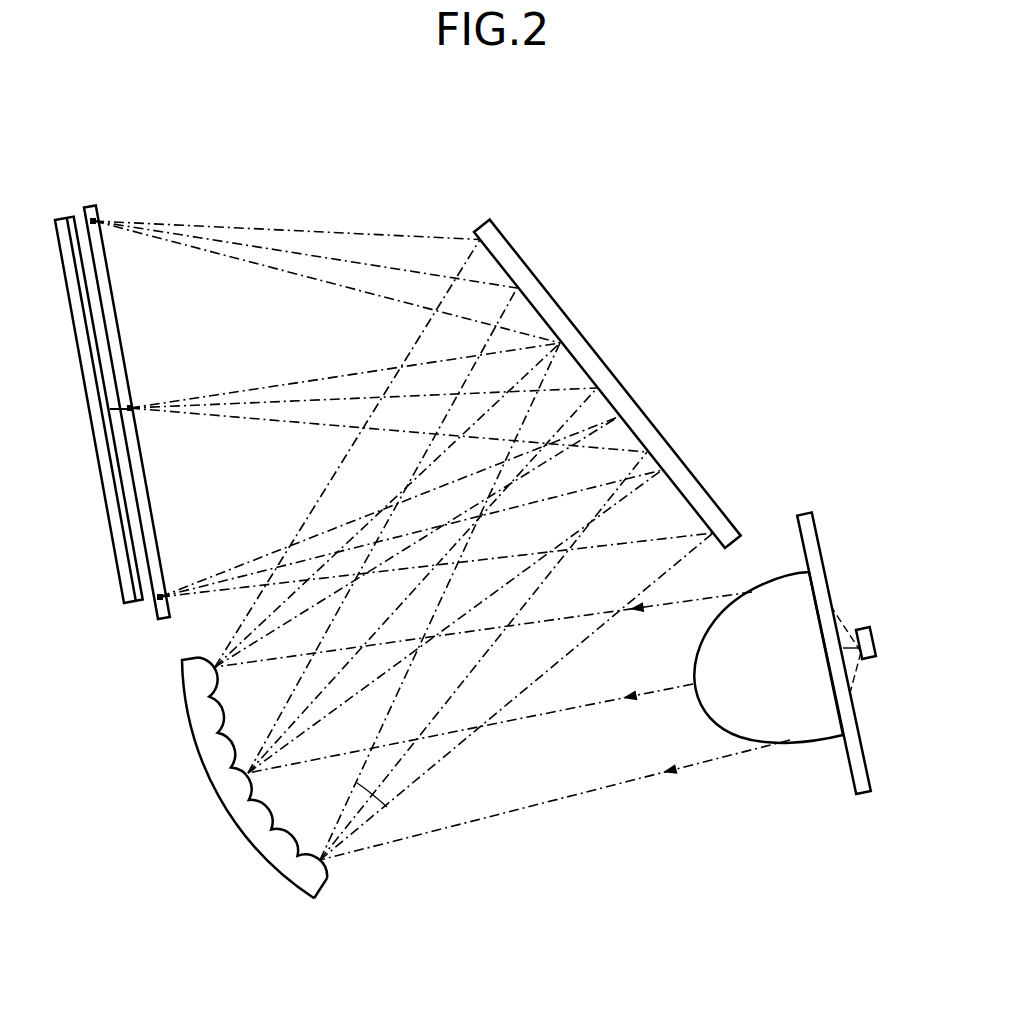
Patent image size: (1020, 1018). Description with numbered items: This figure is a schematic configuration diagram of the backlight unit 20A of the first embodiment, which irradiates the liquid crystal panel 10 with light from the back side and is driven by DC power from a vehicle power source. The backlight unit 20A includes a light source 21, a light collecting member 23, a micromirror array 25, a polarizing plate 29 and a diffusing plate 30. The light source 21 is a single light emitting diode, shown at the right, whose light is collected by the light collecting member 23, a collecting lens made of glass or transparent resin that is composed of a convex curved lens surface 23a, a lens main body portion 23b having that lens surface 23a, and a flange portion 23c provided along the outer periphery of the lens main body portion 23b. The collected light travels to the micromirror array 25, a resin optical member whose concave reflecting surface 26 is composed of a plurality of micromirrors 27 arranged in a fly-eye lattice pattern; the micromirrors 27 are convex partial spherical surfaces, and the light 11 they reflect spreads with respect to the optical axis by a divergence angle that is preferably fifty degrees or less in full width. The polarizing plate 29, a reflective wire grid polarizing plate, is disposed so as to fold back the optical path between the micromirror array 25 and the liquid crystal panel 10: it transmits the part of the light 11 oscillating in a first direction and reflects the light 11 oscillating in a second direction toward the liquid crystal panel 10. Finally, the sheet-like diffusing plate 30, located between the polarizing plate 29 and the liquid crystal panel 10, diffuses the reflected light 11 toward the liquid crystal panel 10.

The backlight unit 20A is at (450, 160).
The liquid crystal panel 10 is at (58, 208).
The diffusing plate 30 is at (90, 192).
The polarizing plate 29 is at (582, 332).
The micromirror array 25 is at (265, 902).
The reflecting surface 26 is at (346, 870).
The micromirrors 27 is at (325, 883).
The light collecting member 23 is at (797, 770).
The lens surface 23a is at (727, 727).
The lens main body portion 23b is at (820, 710).
The flange portion 23c is at (840, 782).
The light source 21 is at (892, 632).
The light 11 is at (533, 806).